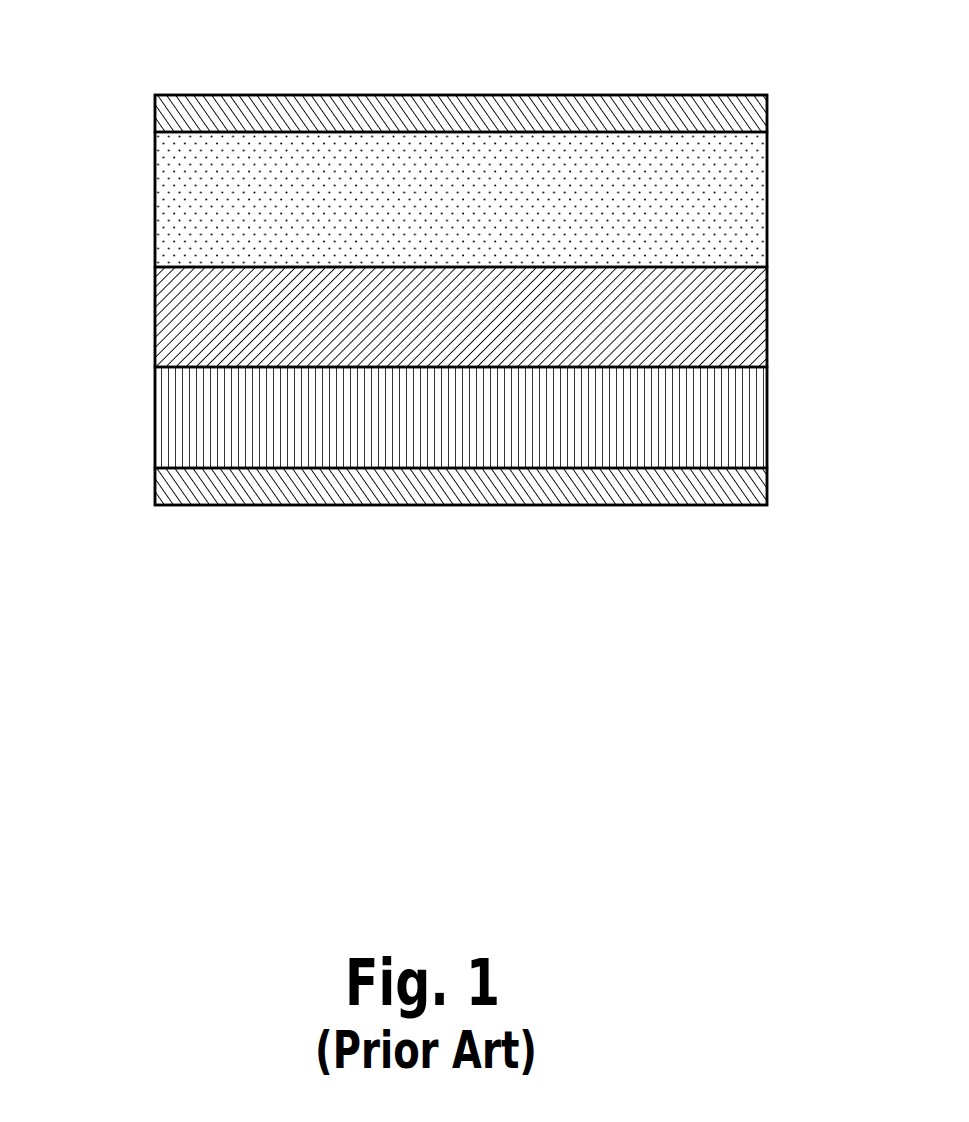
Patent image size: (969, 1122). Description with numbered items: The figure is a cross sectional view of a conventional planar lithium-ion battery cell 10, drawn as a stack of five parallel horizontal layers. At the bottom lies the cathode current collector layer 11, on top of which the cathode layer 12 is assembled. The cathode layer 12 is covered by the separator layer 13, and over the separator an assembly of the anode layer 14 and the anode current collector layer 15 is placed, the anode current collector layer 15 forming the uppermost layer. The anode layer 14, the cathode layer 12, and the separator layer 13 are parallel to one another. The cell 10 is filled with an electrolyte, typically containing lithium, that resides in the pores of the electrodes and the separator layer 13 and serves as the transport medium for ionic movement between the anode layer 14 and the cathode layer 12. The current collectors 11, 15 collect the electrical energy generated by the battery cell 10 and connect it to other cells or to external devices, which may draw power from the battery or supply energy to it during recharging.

The battery cell 10 is at (464, 688).
The cathode current collector layer 11 is at (223, 487).
The cathode layer 12 is at (175, 402).
The separator layer 13 is at (747, 318).
The anode layer 14 is at (175, 217).
The anode current collector layer 15 is at (715, 107).